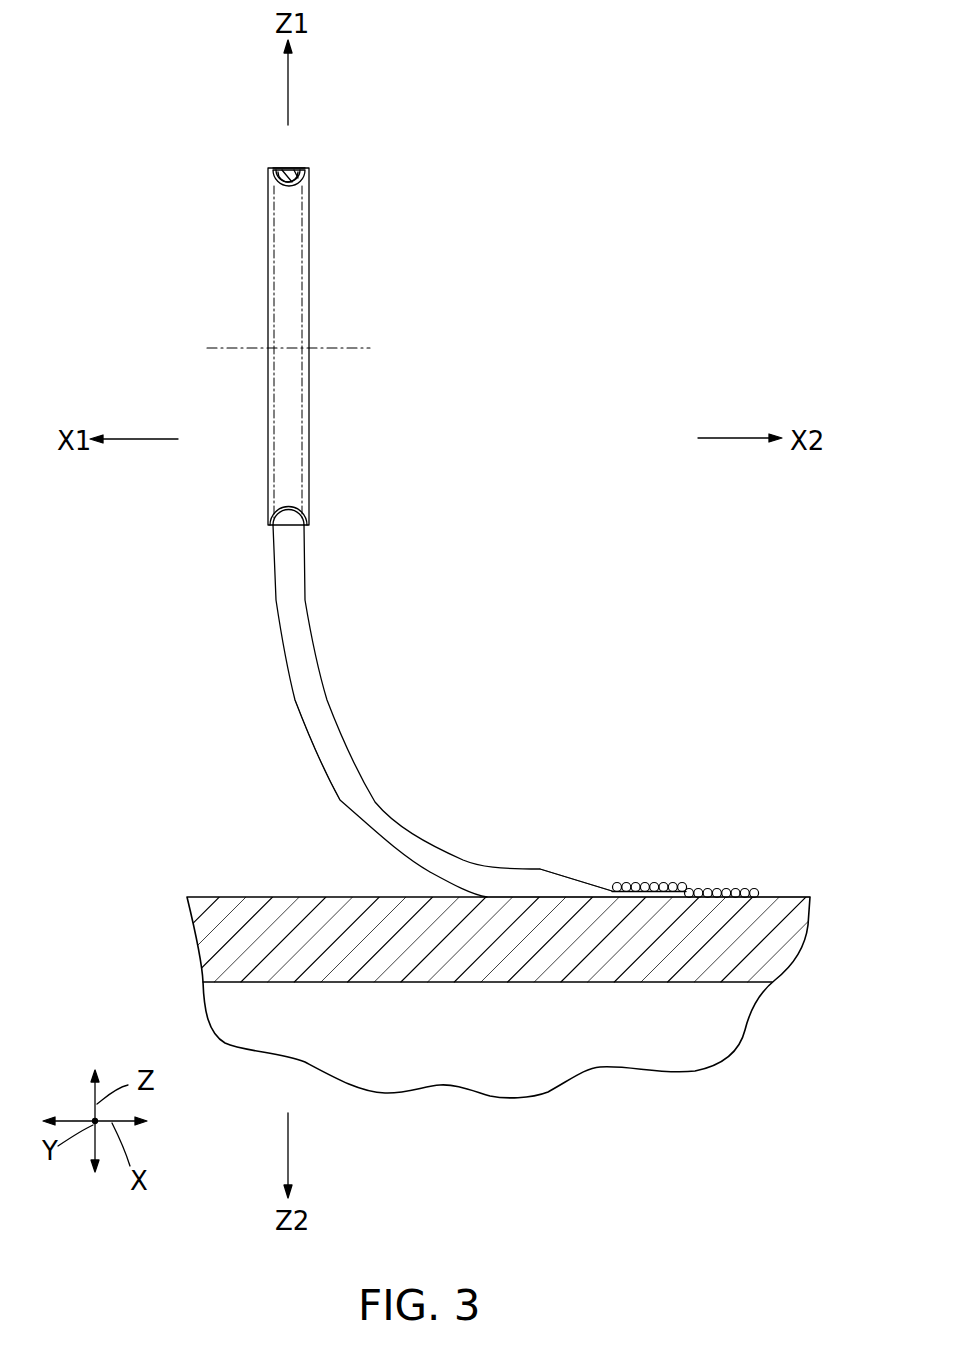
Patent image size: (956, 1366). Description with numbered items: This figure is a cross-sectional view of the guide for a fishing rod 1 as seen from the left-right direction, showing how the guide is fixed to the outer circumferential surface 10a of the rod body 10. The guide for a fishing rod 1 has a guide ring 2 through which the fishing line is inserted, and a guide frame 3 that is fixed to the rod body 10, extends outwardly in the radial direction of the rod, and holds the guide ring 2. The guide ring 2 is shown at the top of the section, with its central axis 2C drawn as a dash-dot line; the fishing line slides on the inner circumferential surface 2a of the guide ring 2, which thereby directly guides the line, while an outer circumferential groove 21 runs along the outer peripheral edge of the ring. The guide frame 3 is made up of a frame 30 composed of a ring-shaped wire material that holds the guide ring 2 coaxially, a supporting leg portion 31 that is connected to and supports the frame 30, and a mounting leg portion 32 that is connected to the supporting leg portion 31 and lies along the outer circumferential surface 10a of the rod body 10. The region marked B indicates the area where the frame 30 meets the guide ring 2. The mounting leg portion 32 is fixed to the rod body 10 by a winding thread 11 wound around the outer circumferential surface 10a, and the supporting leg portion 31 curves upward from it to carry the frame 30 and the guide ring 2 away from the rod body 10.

The guide for a fishing rod 1 is at (260, 106).
The guide ring 2 is at (310, 262).
The central axis 2C is at (338, 348).
The inner circumferential surface 2a is at (290, 508).
The outer circumferential groove 21 is at (287, 171).
The frame 30 is at (296, 171).
The ball bonding portion B is at (322, 162).
The guide frame 3 is at (262, 577).
The supporting leg portion 31 is at (296, 705).
The mounting leg portion 32 is at (590, 882).
The winding thread 11 is at (713, 889).
The rod body 10 is at (258, 896).
The outer circumferential surface 10a is at (787, 886).